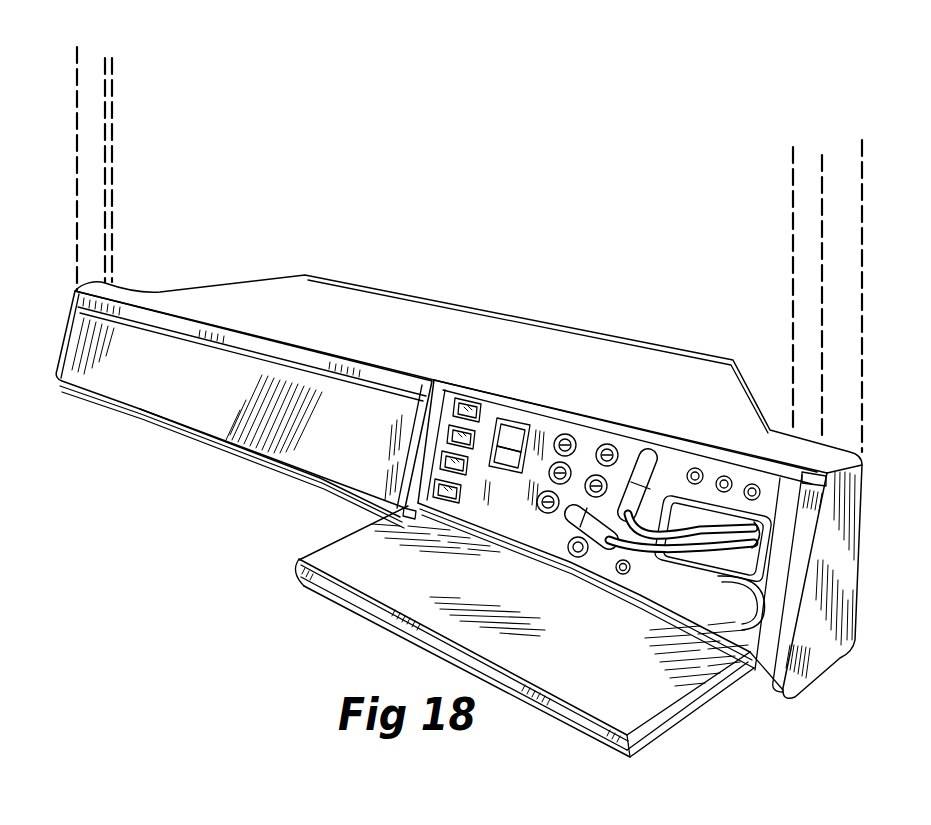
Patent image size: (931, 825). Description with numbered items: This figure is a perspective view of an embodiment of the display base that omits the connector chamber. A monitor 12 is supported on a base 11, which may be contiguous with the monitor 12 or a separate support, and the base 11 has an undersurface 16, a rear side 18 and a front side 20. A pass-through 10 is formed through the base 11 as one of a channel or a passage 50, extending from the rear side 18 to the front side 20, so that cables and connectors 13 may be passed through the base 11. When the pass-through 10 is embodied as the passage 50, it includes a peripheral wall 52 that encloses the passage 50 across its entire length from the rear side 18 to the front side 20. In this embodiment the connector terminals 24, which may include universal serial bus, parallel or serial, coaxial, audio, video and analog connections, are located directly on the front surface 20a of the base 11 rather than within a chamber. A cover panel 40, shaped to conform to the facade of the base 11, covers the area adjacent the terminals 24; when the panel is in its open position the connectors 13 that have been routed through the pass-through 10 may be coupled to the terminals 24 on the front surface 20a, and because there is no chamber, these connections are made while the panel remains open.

The pass-through 10 is at (704, 500).
The base 11 is at (171, 446).
The monitor 12 is at (76, 130).
The connectors 13 is at (645, 527).
The undersurface 16 is at (827, 673).
The rear side 18 is at (545, 320).
The front side 20 is at (330, 450).
The front surface 20a is at (503, 488).
The connector terminals 24 is at (608, 444).
The cover panel 40 is at (330, 590).
The passage 50 is at (683, 582).
The peripheral wall 52 is at (753, 578).